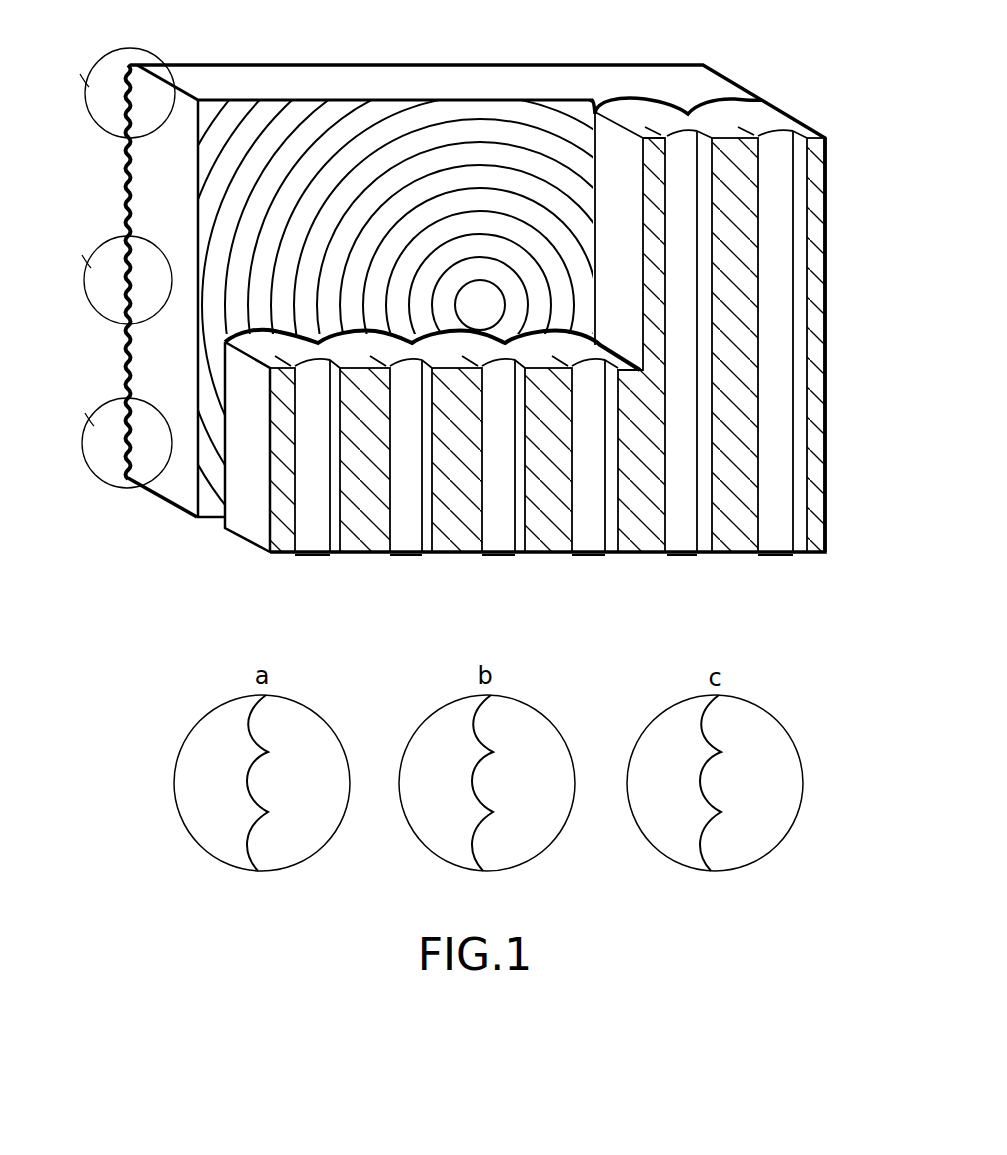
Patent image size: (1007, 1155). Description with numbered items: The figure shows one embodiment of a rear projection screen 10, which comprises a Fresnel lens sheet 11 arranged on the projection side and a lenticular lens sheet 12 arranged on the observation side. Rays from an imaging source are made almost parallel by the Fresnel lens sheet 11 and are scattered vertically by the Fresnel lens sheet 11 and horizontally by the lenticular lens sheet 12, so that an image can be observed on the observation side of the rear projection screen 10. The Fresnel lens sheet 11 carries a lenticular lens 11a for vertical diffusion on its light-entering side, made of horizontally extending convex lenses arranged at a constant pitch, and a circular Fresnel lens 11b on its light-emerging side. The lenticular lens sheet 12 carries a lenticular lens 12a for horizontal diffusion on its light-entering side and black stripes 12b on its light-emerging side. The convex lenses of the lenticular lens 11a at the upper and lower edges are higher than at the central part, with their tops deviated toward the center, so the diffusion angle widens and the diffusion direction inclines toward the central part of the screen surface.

The rear projection screen 10 is at (841, 106).
The Fresnel lens sheet 11 is at (480, 314).
The lenticular lens for vertical diffusion 11a is at (122, 190).
The circular Fresnel lens 11b is at (333, 97).
The lenticular lens sheet 12 is at (568, 279).
The lenticular lens for horizontal diffusion 12a is at (693, 108).
The black stripes 12b is at (822, 437).